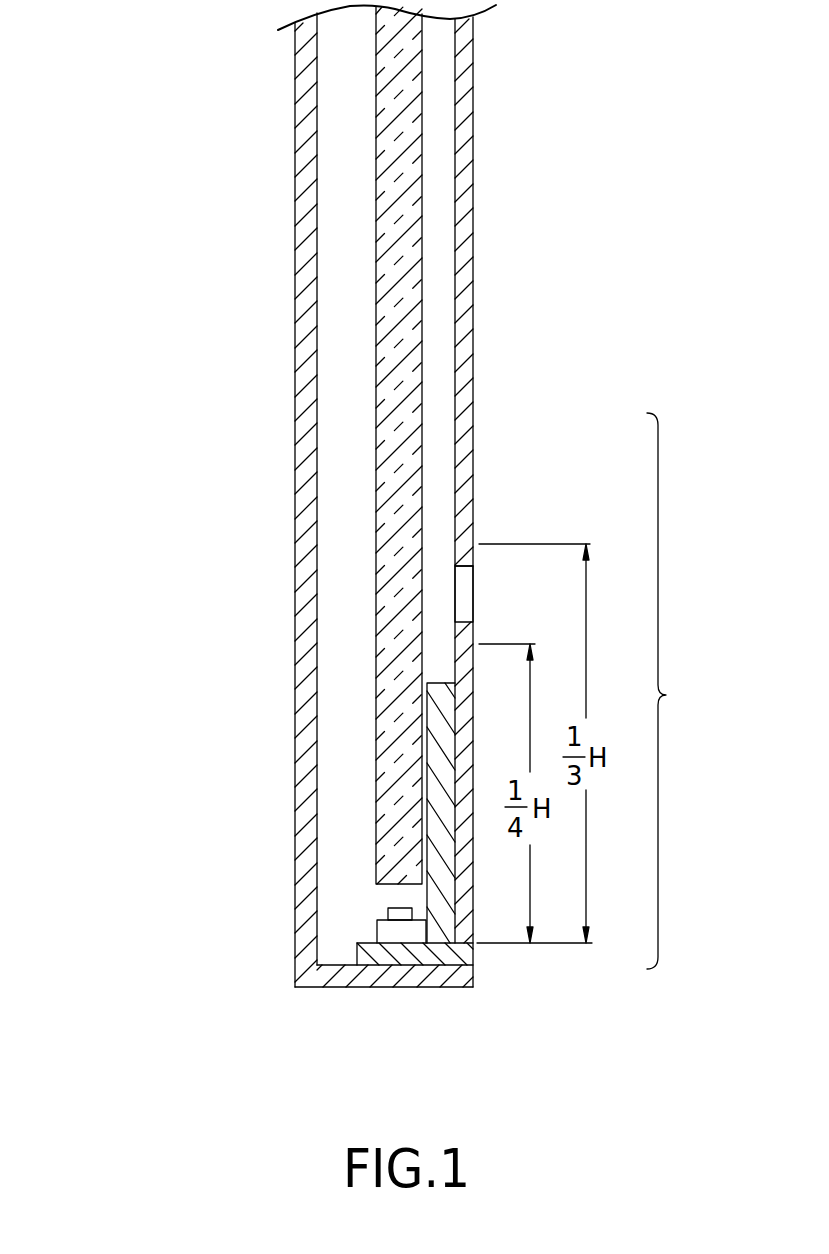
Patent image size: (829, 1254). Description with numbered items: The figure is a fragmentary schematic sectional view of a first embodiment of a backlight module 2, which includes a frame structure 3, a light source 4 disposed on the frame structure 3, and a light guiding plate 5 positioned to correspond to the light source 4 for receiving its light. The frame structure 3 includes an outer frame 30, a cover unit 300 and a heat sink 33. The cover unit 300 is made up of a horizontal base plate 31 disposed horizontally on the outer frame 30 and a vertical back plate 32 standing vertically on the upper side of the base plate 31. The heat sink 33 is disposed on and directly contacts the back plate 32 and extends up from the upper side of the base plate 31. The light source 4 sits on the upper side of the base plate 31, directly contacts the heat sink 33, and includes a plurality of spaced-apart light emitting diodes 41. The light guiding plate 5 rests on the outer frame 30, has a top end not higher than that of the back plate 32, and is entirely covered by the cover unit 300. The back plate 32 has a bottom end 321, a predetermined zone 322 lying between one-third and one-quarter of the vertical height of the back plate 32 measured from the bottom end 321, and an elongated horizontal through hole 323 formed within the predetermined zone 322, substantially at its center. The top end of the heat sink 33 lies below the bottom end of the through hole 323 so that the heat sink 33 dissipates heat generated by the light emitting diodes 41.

The backlight module 2 is at (233, 500).
The frame structure 3 is at (444, 535).
The outer frame 30 is at (302, 517).
The horizontal base plate 31 is at (468, 955).
The vertical back plate 32 is at (544, 502).
The bottom end 321 is at (462, 942).
The predetermined zone 322 is at (496, 558).
The horizontal through hole 323 is at (466, 590).
The heat sink 33 is at (437, 718).
The light source 4 is at (334, 892).
The light emitting diodes 41 is at (399, 910).
The light guiding plate 5 is at (357, 398).
The cover unit 300 is at (691, 691).